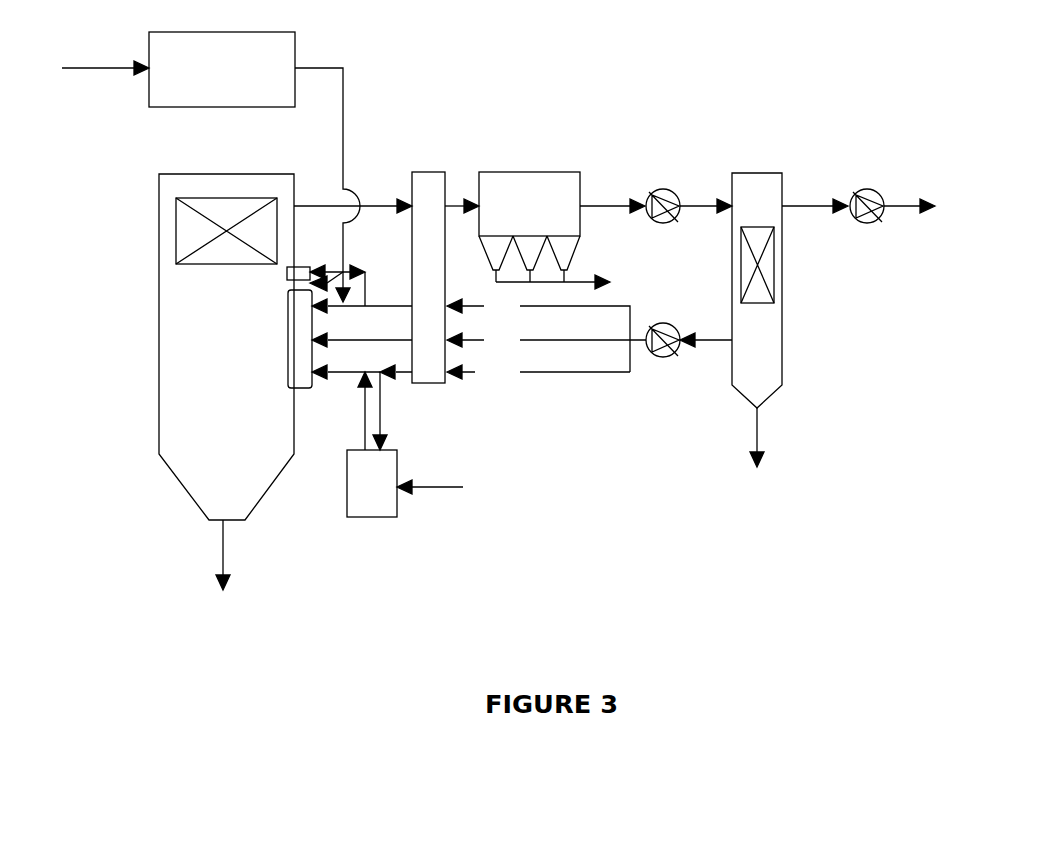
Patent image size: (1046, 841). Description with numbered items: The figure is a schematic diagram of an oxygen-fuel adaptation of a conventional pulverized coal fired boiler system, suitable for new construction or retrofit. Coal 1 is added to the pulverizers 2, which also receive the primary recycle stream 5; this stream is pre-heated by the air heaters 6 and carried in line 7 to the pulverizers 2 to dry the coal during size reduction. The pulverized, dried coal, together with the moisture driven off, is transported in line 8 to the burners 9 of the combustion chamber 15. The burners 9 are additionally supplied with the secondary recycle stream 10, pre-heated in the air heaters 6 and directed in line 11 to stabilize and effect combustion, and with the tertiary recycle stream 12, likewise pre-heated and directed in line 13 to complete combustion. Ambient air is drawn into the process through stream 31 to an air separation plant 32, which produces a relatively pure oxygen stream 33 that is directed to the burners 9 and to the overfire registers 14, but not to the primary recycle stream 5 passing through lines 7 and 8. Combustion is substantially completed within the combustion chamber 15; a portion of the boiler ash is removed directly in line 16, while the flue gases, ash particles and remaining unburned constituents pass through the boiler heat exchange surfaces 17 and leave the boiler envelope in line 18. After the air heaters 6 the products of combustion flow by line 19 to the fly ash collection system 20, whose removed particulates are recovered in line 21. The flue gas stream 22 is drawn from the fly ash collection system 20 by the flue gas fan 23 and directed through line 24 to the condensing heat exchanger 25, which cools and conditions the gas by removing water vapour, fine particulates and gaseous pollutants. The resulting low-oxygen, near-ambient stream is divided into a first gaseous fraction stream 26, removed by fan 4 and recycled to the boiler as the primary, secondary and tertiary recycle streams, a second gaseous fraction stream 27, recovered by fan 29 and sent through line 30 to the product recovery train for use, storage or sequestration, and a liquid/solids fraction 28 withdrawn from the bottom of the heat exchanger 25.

The coal 1 is at (442, 490).
The pulverizers 2 is at (365, 517).
The fan 4 is at (662, 322).
The primary recycle stream 5 is at (505, 372).
The air heaters 6 is at (425, 383).
The line 7 is at (380, 395).
The line 8 is at (365, 398).
The burners 9 is at (290, 290).
The secondary recycle stream 10 is at (522, 340).
The line 11 is at (342, 334).
The tertiary recycle stream 12 is at (471, 332).
The line 13 is at (385, 303).
The overfire registers 14 is at (306, 285).
The combustion chamber 15 is at (142, 275).
The line 16 is at (234, 573).
The boiler heat exchange surfaces 17 is at (237, 267).
The line 18 is at (367, 205).
The line 19 is at (457, 198).
The fly ash collection system 20 is at (500, 172).
The line 21 is at (573, 283).
The flue gas stream 22 is at (593, 203).
The flue gas fan 23 is at (657, 190).
The line 24 is at (690, 205).
The condensing heat exchanger 25 is at (747, 173).
The first gaseous fraction stream 26 is at (717, 340).
The second gaseous fraction stream 27 is at (808, 208).
The liquid/solids fraction 28 is at (757, 456).
The fan 29 is at (863, 193).
The line 30 is at (892, 208).
The stream 31 is at (83, 68).
The air separation plant 32 is at (200, 107).
The oxygen stream 33 is at (333, 67).